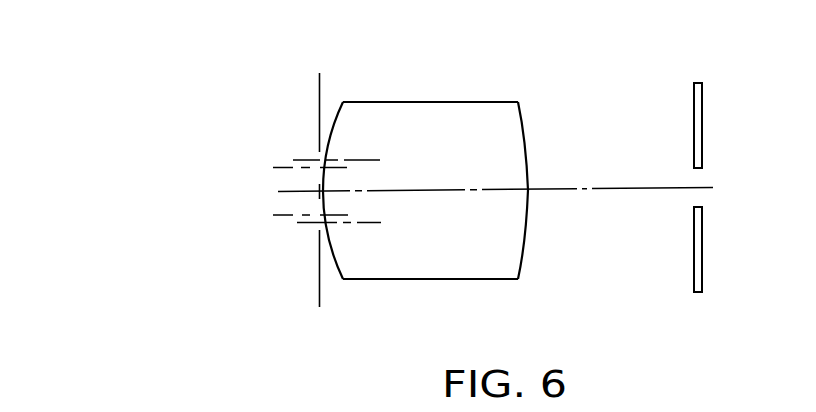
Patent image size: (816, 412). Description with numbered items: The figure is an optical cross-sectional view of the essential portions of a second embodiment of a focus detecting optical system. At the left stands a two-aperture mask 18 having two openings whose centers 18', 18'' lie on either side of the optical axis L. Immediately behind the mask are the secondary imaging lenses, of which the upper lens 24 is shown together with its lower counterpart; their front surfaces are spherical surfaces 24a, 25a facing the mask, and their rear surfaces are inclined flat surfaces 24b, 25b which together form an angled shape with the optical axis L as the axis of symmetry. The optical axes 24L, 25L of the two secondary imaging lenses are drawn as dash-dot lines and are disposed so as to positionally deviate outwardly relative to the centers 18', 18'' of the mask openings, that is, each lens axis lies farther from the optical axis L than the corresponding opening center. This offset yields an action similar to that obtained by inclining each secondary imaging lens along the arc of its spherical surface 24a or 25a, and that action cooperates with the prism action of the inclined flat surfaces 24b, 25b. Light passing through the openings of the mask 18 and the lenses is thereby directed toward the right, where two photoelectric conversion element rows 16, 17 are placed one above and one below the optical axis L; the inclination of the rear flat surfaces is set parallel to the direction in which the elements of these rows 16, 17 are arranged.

The photoelectric conversion element row 16 is at (702, 92).
The photoelectric conversion element row 17 is at (702, 273).
The two-aperture mask 18 is at (346, 172).
The center of mask opening 18' is at (287, 183).
The center of mask opening 18'' is at (288, 239).
The secondary imaging lens 24 is at (415, 114).
The spherical surface 24a is at (320, 156).
The inclined flat surface 24b is at (523, 122).
The optical axis of secondary imaging lens 24L is at (376, 159).
The spherical surface 25a is at (343, 278).
The inclined flat surface 25b is at (522, 250).
The optical axis of secondary imaging lens 25L is at (376, 222).
The optical axis L is at (617, 188).